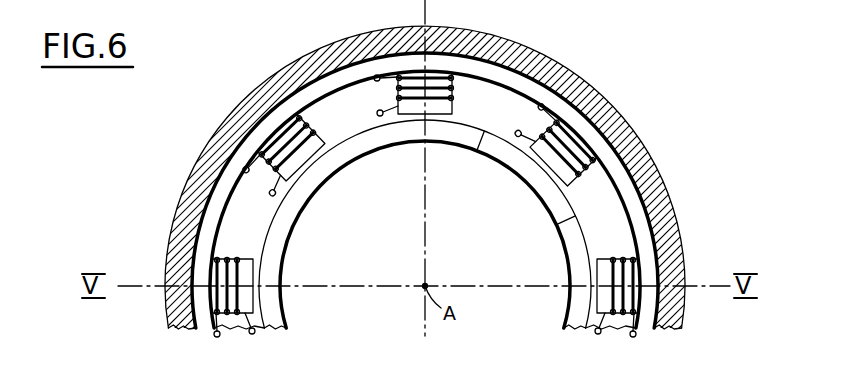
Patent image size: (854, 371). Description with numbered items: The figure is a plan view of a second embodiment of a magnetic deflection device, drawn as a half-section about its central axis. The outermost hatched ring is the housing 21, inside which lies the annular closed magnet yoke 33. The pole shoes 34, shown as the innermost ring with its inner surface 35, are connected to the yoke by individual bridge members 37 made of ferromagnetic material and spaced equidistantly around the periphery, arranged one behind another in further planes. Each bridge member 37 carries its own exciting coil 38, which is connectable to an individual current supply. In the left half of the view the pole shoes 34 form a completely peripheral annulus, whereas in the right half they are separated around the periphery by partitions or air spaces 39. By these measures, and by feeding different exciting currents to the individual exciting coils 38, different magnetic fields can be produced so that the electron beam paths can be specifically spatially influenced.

The housing 21 is at (660, 166).
The magnet yoke 33 is at (247, 152).
The pole shoes 34 is at (278, 232).
The ring surface 35 is at (323, 185).
The bridge members 37 is at (562, 148).
The exciting coil 38 is at (242, 253).
The partitions or air spaces 39 is at (477, 152).